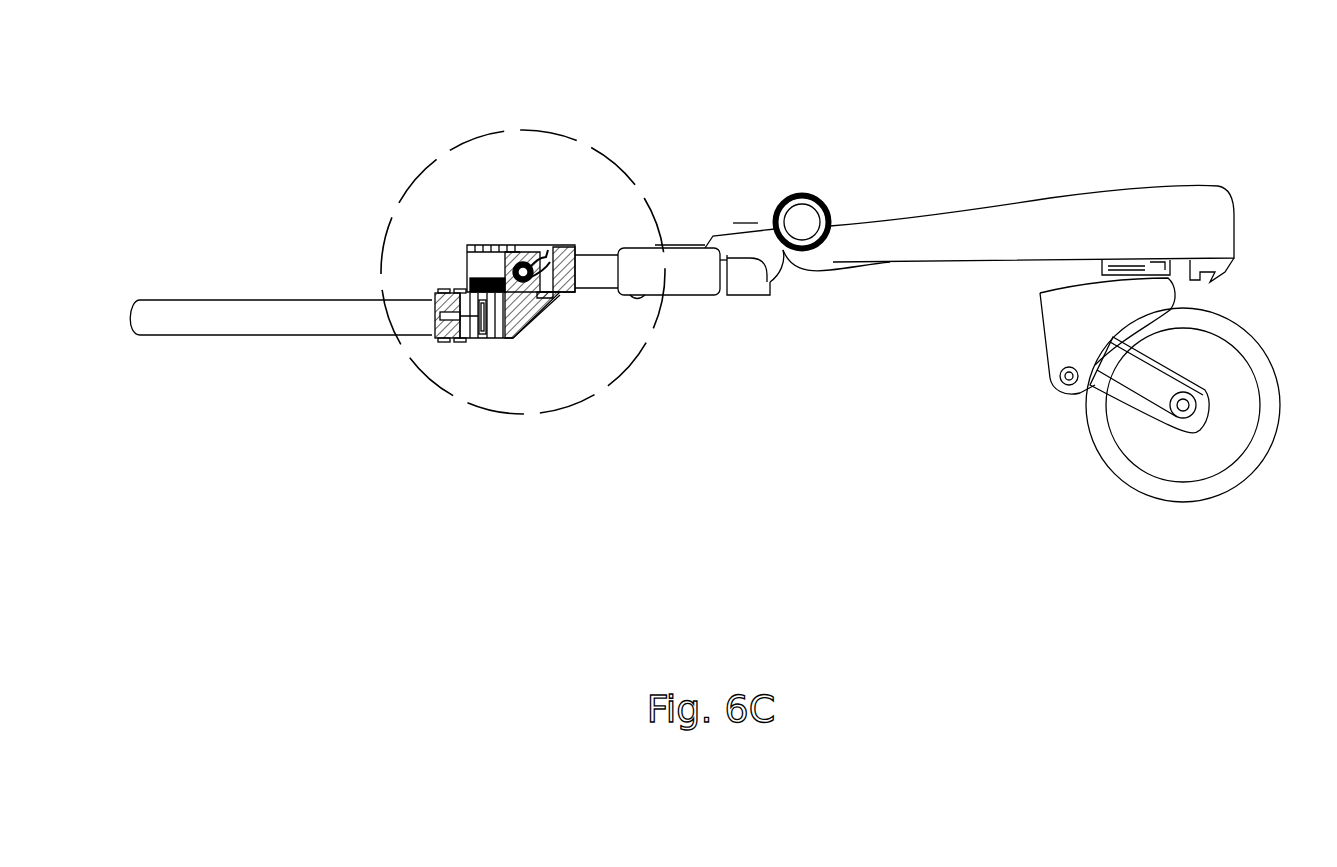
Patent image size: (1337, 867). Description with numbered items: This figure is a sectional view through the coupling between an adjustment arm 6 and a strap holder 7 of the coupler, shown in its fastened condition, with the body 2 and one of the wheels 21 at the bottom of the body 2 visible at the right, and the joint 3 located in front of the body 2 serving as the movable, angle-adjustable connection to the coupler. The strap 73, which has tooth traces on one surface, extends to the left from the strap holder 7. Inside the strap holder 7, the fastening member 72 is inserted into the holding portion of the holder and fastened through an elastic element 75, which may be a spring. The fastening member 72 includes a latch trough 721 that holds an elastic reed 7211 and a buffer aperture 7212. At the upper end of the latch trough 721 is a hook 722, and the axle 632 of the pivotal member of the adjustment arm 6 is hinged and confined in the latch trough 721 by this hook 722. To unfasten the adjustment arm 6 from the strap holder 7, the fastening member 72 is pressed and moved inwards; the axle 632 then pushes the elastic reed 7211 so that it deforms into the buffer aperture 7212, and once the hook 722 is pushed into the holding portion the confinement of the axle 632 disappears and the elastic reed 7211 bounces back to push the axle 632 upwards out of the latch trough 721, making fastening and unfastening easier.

The body 2 is at (937, 223).
The wheels 21 is at (1112, 442).
The joint 3 is at (802, 218).
The adjustment arm 6 is at (663, 160).
The strap holder 7 is at (360, 186).
The fastening member 72 is at (562, 243).
The latch trough 721 is at (543, 282).
The elastic reed 7211 is at (538, 293).
The buffer aperture 7212 is at (568, 299).
The hook 722 is at (522, 266).
The strap 73 is at (240, 315).
The elastic element 75 is at (490, 282).
The axle 632 is at (527, 258).